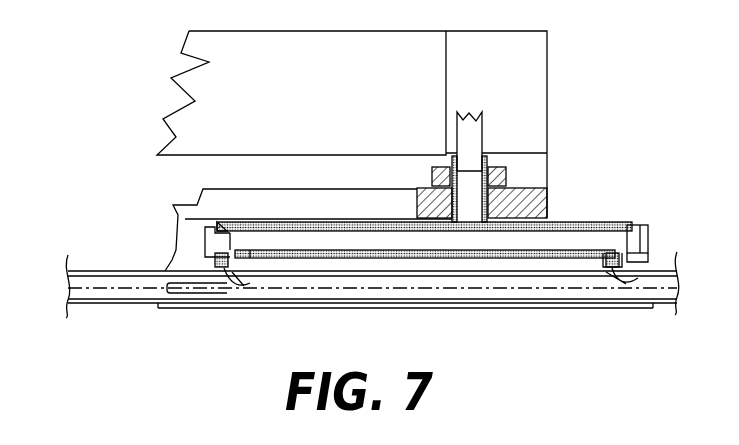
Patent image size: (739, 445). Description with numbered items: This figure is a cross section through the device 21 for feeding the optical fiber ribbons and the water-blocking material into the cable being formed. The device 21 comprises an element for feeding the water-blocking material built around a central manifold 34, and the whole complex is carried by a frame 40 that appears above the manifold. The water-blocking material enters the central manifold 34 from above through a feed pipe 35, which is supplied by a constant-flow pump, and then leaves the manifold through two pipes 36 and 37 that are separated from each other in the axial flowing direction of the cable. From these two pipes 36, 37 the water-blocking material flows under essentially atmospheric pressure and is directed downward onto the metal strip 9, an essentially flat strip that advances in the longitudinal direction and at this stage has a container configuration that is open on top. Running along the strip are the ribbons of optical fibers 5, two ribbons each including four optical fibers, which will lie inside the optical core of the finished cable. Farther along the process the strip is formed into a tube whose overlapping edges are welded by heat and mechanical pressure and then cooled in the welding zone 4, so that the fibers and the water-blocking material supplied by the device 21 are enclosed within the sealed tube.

The device for feeding the optical fiber ribbons and water-blocking material 21 is at (137, 185).
The frame 40 is at (537, 72).
The feed pipe 35 is at (475, 135).
The central manifold 34 is at (572, 240).
The pipe 37 is at (235, 278).
The pipe 36 is at (623, 290).
The welding zone 4 is at (398, 290).
The ribbons of optical fibers 5 is at (103, 293).
The metal strip 9 is at (497, 297).